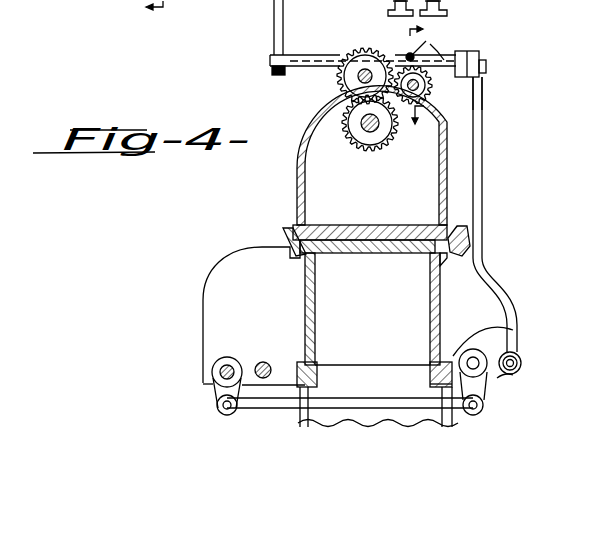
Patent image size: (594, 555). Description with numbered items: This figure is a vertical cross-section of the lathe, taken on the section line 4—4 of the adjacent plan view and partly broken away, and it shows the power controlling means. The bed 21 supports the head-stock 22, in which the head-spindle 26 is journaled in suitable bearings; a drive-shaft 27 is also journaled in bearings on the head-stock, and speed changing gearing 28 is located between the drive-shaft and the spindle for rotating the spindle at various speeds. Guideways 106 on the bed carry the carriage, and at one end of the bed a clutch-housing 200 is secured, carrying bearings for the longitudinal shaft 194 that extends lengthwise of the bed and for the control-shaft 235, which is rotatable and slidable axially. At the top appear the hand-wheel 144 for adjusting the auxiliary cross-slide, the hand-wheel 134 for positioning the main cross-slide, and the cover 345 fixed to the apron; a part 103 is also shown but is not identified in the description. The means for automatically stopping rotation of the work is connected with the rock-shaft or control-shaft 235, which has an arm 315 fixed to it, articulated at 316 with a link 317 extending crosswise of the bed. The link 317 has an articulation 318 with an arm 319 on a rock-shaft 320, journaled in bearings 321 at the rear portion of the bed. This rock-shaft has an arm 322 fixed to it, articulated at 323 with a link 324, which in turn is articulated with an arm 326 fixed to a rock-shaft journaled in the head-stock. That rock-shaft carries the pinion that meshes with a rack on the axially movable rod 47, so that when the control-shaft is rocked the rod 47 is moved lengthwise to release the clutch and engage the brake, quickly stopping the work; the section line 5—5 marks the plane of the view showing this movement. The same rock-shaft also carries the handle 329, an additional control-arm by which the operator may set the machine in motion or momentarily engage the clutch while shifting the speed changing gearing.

The section line 4— 4 is at (141, 12).
The handle 329 is at (259, 0).
The hand-wheel 144 is at (391, 13).
The hand-wheel 134 is at (447, 12).
The cover 345 is at (545, 0).
The housing 103 is at (556, 5).
The section line 5— 5 is at (422, 71).
The axially movable rod 47 is at (441, 47).
The arm 326 is at (472, 51).
The head-stock 22 is at (286, 116).
The speed changing gearing 28 is at (346, 102).
The head-spindle 26 is at (363, 141).
The drive-shaft 27 is at (473, 103).
The link 324 is at (477, 181).
The guideways 106 is at (288, 233).
The bed 21 is at (306, 304).
The clutch-housing 200 is at (206, 312).
The control-shaft 235 is at (243, 351).
The longitudinal shaft 194 is at (267, 362).
The arm 315 is at (211, 397).
The articulation 316 is at (217, 410).
The link 317 is at (283, 408).
The bearings 321 is at (482, 352).
The rock-shaft 320 is at (514, 330).
The articulation 323 is at (517, 356).
The arm 322 is at (514, 375).
The arm 319 is at (485, 388).
The articulation 318 is at (486, 409).